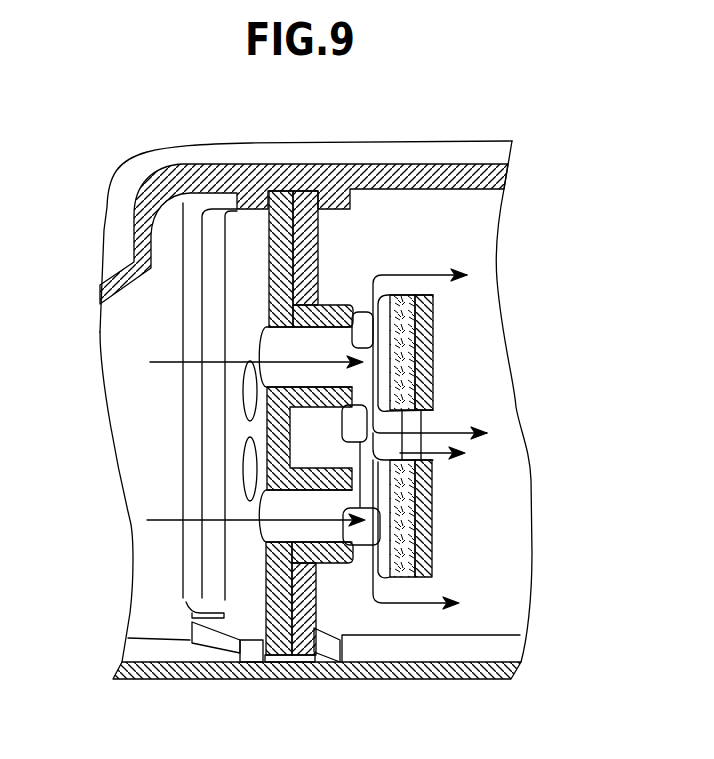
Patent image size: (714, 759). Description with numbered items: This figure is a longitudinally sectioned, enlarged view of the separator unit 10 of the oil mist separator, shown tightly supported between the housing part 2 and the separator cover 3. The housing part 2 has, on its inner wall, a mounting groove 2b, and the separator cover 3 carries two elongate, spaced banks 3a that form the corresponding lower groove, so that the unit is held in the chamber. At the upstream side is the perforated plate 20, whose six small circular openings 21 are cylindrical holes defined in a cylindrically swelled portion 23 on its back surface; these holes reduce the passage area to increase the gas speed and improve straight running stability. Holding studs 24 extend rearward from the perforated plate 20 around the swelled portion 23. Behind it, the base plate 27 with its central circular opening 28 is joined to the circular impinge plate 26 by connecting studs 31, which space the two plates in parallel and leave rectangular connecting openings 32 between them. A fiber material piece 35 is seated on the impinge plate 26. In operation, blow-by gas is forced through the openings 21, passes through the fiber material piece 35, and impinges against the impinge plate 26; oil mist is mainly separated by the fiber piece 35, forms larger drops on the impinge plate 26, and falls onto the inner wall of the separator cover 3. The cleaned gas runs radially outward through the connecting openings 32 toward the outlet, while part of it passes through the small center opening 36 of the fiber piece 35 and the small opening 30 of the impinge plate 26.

The separator unit 10 is at (116, 106).
The housing part 2 is at (143, 162).
The mounting groove 2b is at (243, 192).
The separator cover 3 is at (505, 648).
The banks 3a is at (192, 612).
The perforated plate 20 is at (247, 263).
The circular openings 21 is at (287, 530).
The cylindrically swelled portion 23 is at (335, 641).
The holding studs 24 is at (358, 314).
The impinge plate 26 is at (427, 502).
The base plate 27 is at (307, 191).
The circular opening 28 is at (321, 303).
The small circular opening 30 is at (404, 458).
The connecting studs 31 is at (355, 560).
The connecting openings 32 is at (366, 604).
The fiber material piece 35 is at (398, 575).
The small circular opening 36 is at (423, 457).